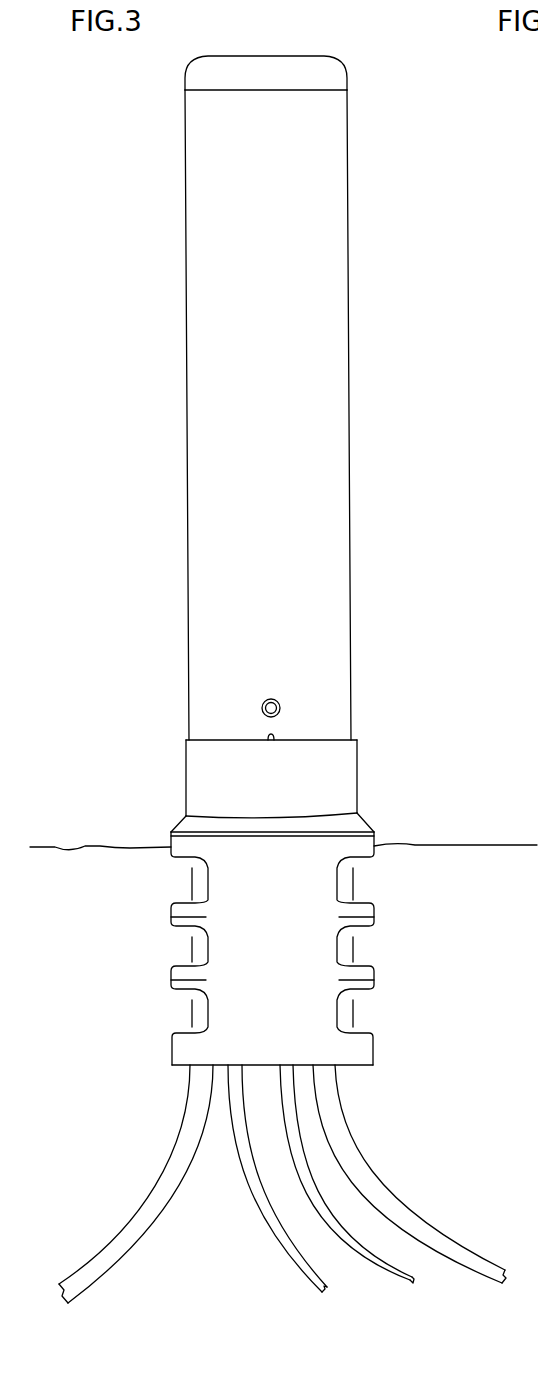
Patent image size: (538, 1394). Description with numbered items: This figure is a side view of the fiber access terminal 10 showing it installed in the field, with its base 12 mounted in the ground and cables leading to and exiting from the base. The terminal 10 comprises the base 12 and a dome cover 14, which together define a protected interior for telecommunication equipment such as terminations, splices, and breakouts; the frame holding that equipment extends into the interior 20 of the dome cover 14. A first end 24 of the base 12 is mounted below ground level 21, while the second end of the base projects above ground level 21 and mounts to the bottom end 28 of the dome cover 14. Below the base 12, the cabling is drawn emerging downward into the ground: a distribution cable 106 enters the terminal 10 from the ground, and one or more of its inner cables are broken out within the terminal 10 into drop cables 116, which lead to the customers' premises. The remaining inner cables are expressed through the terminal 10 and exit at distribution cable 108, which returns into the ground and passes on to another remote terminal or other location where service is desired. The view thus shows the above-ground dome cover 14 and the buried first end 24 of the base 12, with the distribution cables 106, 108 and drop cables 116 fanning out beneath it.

The fiber access terminal 10 is at (152, 218).
The base 12 is at (217, 1065).
The dome cover 14 is at (188, 581).
The interior 20 is at (313, 338).
The ground level 21 is at (102, 847).
The first end 24 is at (353, 1066).
The bottom end 28 is at (350, 713).
The distribution cable 106 is at (107, 1277).
The distribution cable 108 is at (442, 1240).
The drop cables 116 is at (327, 1290).